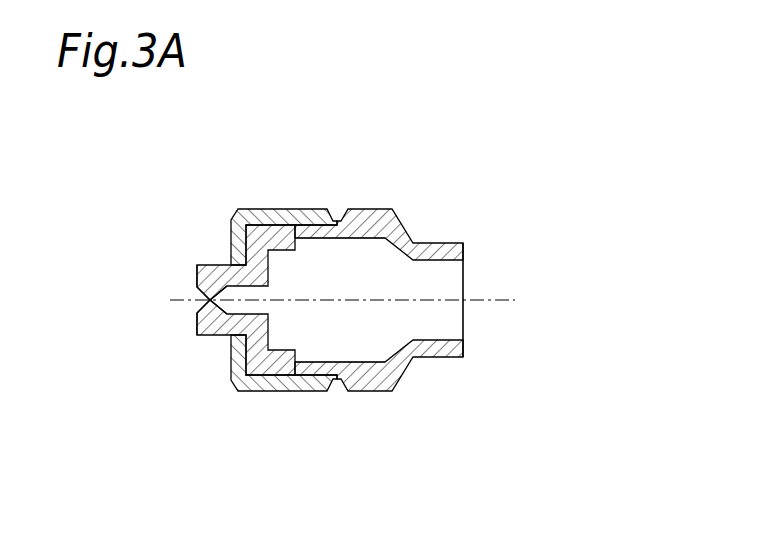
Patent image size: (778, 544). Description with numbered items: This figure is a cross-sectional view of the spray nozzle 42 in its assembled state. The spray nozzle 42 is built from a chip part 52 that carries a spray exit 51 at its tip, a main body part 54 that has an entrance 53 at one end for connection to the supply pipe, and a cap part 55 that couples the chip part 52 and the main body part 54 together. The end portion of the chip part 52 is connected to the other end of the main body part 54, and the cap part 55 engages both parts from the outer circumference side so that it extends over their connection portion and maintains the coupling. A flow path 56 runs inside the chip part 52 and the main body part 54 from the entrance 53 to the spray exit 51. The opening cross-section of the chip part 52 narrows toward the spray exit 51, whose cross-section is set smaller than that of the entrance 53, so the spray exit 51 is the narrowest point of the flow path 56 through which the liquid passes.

The spray nozzle 42 is at (447, 190).
The spray exit 51 is at (205, 300).
The chip part 52 is at (220, 337).
The entrance 53 is at (465, 285).
The main body part 54 is at (433, 357).
The cap part 55 is at (282, 209).
The flow path 56 is at (337, 332).